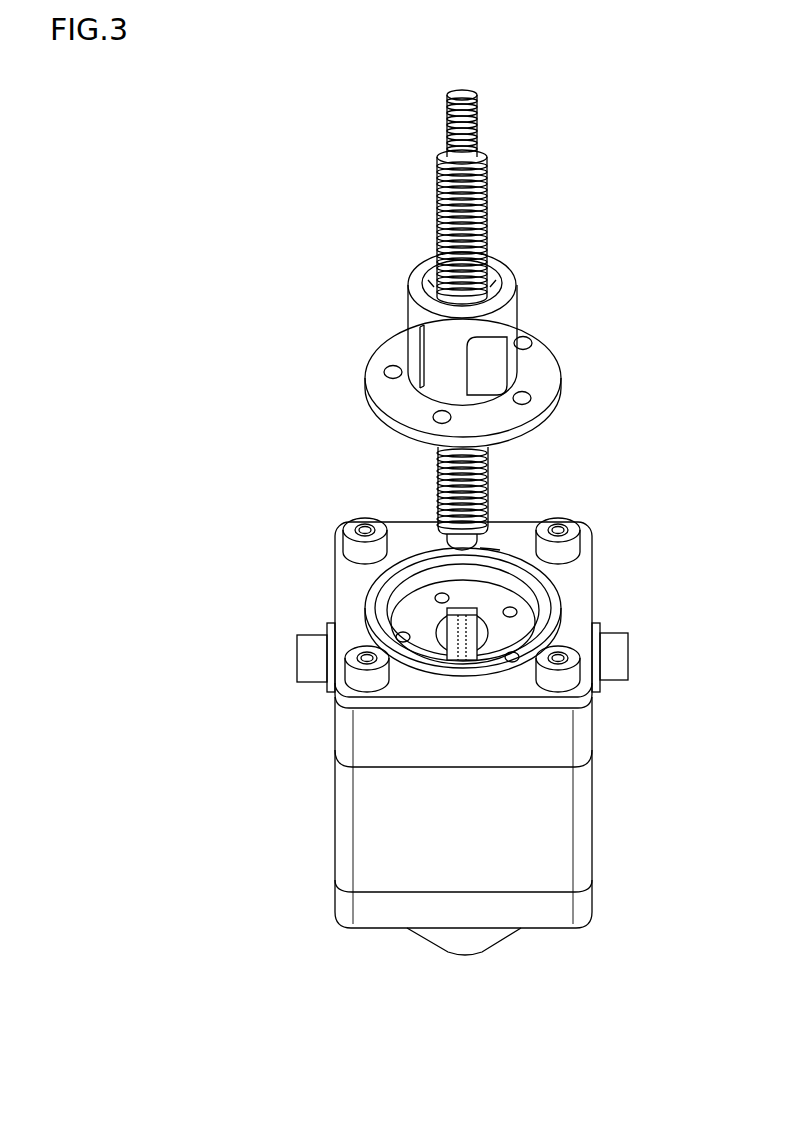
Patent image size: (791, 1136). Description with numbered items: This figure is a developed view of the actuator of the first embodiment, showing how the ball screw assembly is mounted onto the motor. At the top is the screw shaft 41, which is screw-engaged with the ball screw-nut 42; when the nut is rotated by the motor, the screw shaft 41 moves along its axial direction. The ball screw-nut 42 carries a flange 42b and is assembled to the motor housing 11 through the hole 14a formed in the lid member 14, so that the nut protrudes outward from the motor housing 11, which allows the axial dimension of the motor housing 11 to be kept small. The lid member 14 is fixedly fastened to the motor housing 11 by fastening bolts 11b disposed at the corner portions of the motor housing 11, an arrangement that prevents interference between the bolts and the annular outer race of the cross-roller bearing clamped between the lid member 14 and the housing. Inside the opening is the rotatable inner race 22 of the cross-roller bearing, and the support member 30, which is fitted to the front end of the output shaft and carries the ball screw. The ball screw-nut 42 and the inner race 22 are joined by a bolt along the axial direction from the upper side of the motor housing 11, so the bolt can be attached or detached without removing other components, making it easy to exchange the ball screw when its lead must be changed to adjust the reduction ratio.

The screw shaft 41 is at (477, 113).
The ball screw-nut 42 is at (507, 307).
The flange of nut member 42b is at (537, 368).
The hole 14a is at (505, 548).
The lid member 14 is at (577, 563).
The inner race 22 is at (540, 595).
The support member 30 is at (417, 610).
The fastening bolts 11b is at (580, 680).
The motor housing 11 is at (565, 823).